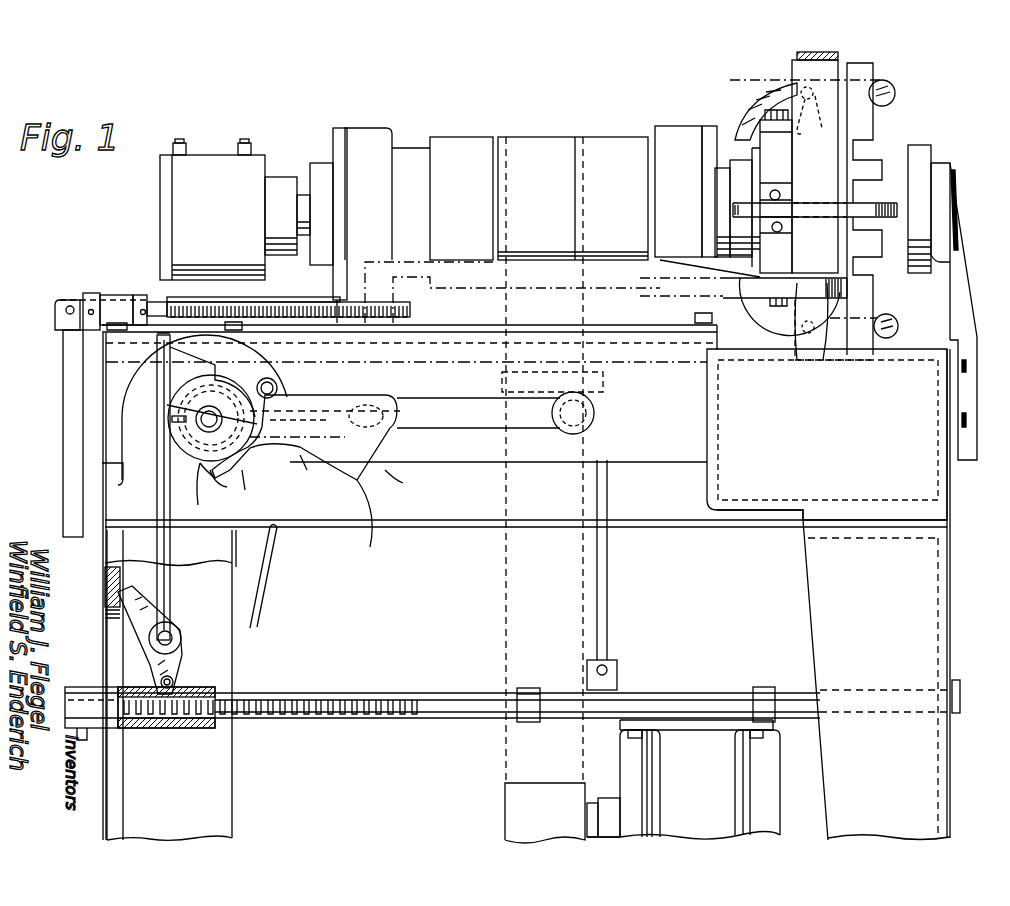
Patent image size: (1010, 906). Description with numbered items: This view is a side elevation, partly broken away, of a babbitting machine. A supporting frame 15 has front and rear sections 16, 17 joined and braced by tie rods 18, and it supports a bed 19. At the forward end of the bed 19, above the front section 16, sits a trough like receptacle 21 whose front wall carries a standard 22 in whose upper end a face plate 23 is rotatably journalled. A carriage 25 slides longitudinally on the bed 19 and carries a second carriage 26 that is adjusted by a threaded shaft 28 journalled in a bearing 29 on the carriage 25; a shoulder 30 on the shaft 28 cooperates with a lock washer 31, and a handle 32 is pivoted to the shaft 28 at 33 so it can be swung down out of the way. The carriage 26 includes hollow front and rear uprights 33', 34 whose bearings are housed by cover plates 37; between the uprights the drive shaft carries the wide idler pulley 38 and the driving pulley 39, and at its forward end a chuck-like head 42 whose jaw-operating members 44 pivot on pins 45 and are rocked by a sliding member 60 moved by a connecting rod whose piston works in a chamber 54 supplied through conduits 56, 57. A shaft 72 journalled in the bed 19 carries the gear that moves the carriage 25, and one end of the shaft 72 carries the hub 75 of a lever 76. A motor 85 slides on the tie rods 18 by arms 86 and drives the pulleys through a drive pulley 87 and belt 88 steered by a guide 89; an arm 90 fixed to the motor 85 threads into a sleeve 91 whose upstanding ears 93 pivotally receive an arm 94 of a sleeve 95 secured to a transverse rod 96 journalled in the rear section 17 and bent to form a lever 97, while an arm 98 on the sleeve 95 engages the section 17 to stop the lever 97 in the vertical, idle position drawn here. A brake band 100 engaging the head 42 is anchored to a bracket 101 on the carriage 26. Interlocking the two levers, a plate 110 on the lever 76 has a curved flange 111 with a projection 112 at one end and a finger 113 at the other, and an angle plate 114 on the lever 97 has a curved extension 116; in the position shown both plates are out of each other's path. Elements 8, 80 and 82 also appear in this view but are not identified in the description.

The lever arm 8 is at (333, 405).
The supporting frame 15 is at (794, 636).
The front section 16 is at (950, 583).
The rear section 17 is at (105, 550).
The tie rods 18 is at (811, 720).
The bed 19 is at (682, 462).
The trough like receptacle 21 is at (758, 488).
The standard 22 is at (965, 300).
The face plate 23 is at (918, 148).
The carriage 25 is at (353, 350).
The second carriage 26 is at (512, 292).
The threaded shaft 28 is at (291, 301).
The bearing 29 is at (113, 294).
The shoulder 30 is at (140, 294).
The lock washer 31 is at (86, 293).
The handle 32 is at (63, 380).
The pivot 33 is at (45, 315).
The front upright 33' is at (678, 172).
The rear upright 34 is at (364, 137).
The cover plates 37 is at (333, 146).
The idler pulley 38 is at (553, 140).
The driving pulley 39 is at (466, 140).
The head 42 is at (766, 96).
The members 44 is at (890, 94).
The pins 45 is at (805, 166).
The chamber 54 is at (175, 211).
The conduit 56 is at (251, 147).
The conduit 57 is at (186, 146).
The member 60 is at (768, 135).
The shaft 72 is at (200, 425).
The hub 75 is at (203, 472).
The lever 76 is at (470, 426).
The lever 80 is at (400, 418).
The hook 82 is at (262, 462).
The motor 85 is at (683, 779).
The arms 86 is at (600, 722).
The drive pulley 87 is at (520, 812).
The belt 88 is at (525, 655).
The guide 89 is at (607, 580).
The arm 90 is at (342, 693).
The sleeve 91 is at (178, 730).
The upstanding ears 93 is at (176, 684).
The arm 94 is at (160, 656).
The sleeve 95 is at (183, 628).
The transversely extending rod 96 is at (256, 636).
The lever 97 is at (170, 548).
The arm 98 is at (108, 587).
The brake band 100 is at (840, 53).
The bracket 101 is at (828, 340).
The plate 110 is at (409, 483).
The flange 111 is at (305, 464).
The projection 112 is at (376, 522).
The finger like projection 113 is at (242, 482).
The angle plate 114 is at (223, 394).
The curved extension 116 is at (204, 431).